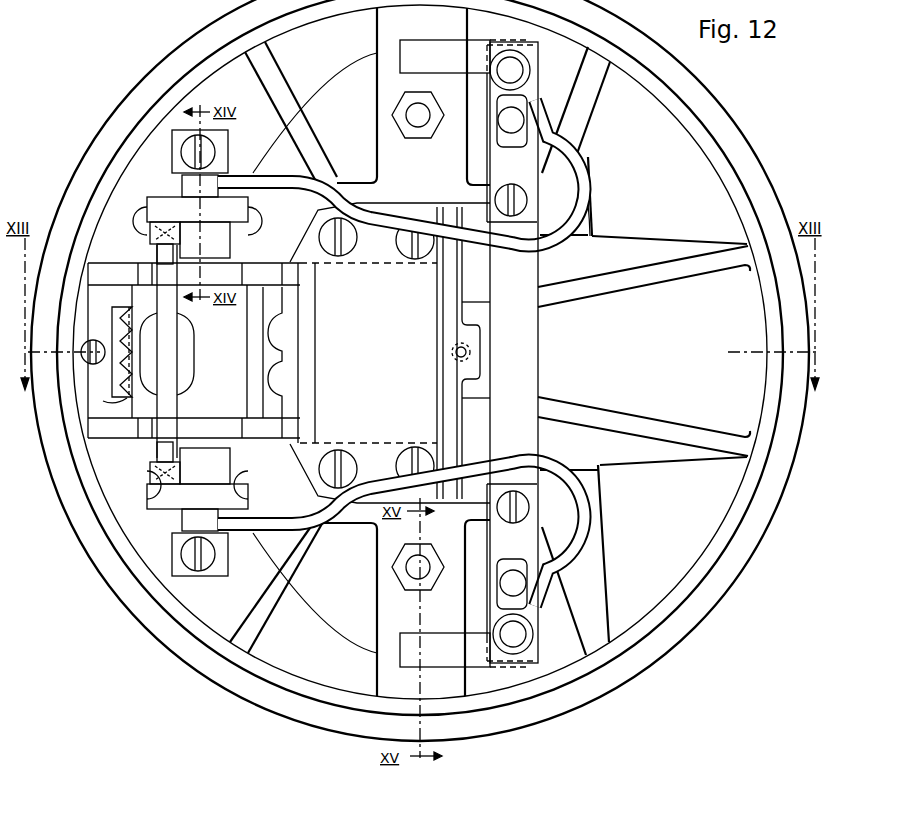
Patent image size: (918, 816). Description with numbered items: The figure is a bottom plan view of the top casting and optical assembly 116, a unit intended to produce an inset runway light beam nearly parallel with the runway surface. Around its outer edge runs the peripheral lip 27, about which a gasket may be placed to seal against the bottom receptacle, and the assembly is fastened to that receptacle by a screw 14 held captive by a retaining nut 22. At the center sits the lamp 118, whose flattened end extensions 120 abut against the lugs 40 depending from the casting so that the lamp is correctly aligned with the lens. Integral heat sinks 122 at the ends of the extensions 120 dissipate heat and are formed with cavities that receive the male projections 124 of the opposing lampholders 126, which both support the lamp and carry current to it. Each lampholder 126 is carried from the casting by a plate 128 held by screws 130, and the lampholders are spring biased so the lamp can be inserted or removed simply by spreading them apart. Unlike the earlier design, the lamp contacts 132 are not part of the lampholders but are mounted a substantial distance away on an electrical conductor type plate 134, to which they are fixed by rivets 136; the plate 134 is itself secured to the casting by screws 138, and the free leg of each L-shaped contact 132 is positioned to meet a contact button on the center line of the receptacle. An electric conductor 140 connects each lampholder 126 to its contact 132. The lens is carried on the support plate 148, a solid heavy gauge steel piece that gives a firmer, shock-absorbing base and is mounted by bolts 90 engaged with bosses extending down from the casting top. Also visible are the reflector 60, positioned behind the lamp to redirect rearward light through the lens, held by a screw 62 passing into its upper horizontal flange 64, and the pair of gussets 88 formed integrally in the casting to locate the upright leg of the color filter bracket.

The screw 14 is at (420, 118).
The retaining nut 22 is at (432, 108).
The peripheral lip 27 is at (696, 611).
The lugs 40 is at (188, 272).
The reflector 60 is at (118, 360).
The screw 62 is at (100, 334).
The upper horizontal flange 64 is at (128, 400).
The gussets 88 is at (280, 378).
The mounting bolts 90 is at (405, 248).
The top casting and optical assembly 116 is at (698, 538).
The lamp 118 is at (192, 350).
The flattened end extensions 120 is at (177, 406).
The heat sinks 122 is at (158, 250).
The male projections 124 is at (156, 237).
The lampholders 126 is at (152, 202).
The plates 128 is at (226, 150).
The screws 130 is at (185, 150).
The lamp contacts 132 is at (450, 44).
The electrical conductor type plate 134 is at (540, 360).
The rivets 136 is at (511, 134).
The screws 138 is at (516, 190).
The electric conductor 140 is at (514, 240).
The support plate 148 is at (430, 409).